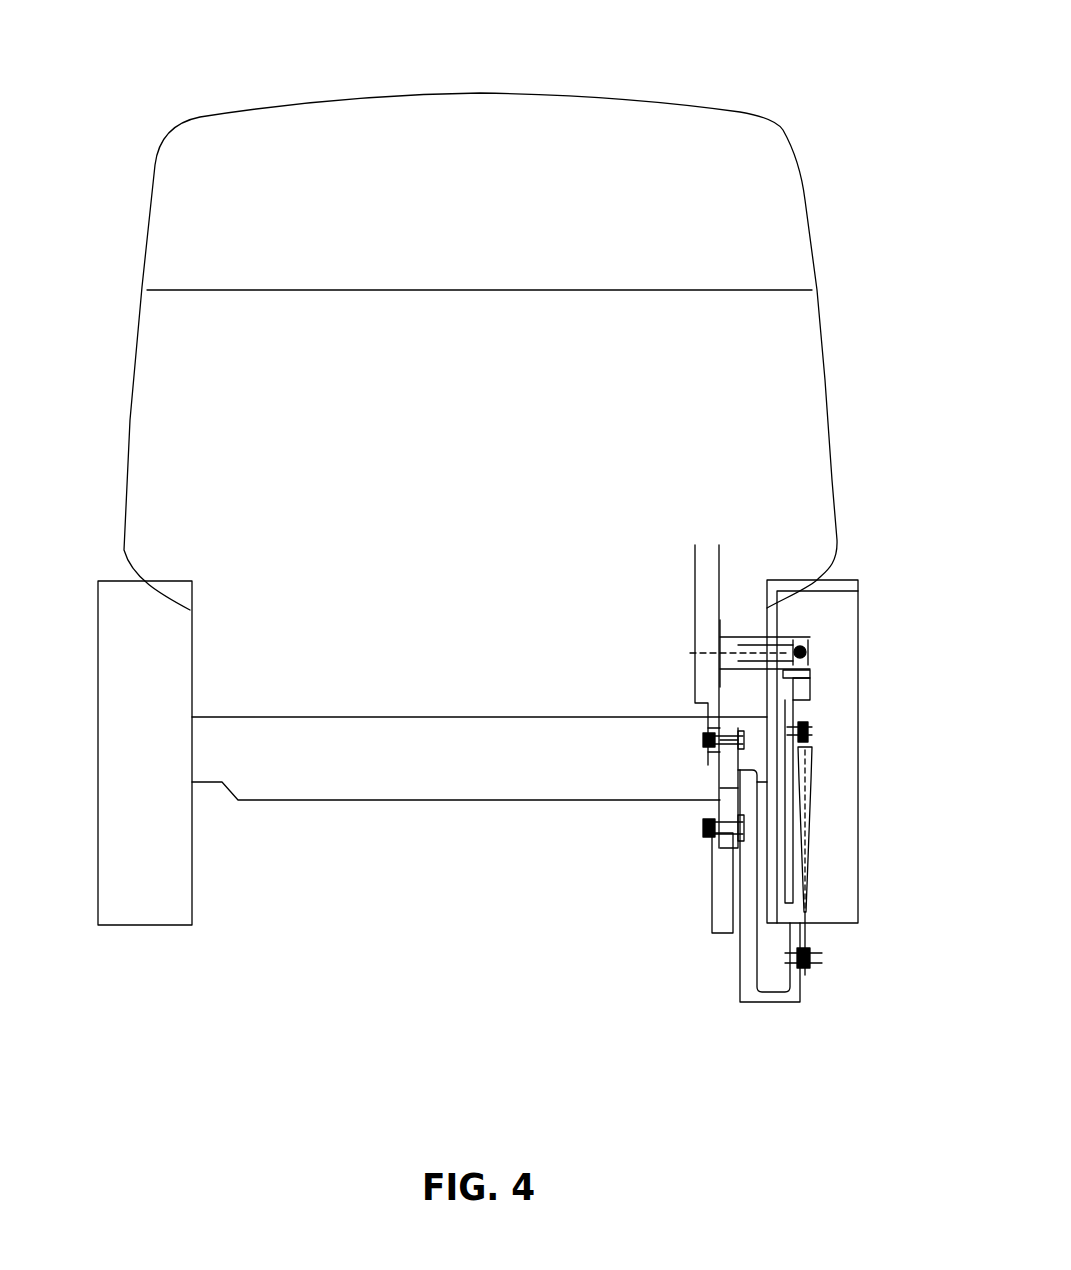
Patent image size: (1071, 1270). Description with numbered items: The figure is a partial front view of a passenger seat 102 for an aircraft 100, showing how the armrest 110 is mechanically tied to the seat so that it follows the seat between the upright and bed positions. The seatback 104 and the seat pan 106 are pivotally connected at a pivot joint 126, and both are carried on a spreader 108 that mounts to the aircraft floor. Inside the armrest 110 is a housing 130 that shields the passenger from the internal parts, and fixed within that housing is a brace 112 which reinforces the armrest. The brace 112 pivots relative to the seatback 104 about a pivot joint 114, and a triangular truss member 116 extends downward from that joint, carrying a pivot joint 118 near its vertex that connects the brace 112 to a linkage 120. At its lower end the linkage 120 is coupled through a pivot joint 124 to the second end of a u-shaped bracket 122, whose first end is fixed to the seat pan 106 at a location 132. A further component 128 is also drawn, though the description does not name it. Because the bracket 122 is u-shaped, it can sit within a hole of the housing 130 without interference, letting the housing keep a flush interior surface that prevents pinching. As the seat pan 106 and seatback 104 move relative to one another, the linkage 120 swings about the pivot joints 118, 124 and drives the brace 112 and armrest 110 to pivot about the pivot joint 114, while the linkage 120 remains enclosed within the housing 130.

The aircraft 100 is at (88, 31).
The passenger seat 102 is at (100, 122).
The seatback 104 is at (502, 475).
The seat pan 106 is at (502, 771).
The spreader 108 is at (712, 913).
The armrest 110 is at (86, 560).
The brace 112 is at (787, 855).
The pivot joint 114 is at (808, 652).
The truss member 116 is at (795, 703).
The pivot joint 118 is at (810, 730).
The linkage 120 is at (815, 853).
The bracket 122 is at (762, 1003).
The pivot joint 124 is at (822, 960).
The pivot joint 126 is at (703, 738).
The bolt 128 is at (705, 828).
The housing 130 is at (842, 574).
The location 132 is at (718, 776).